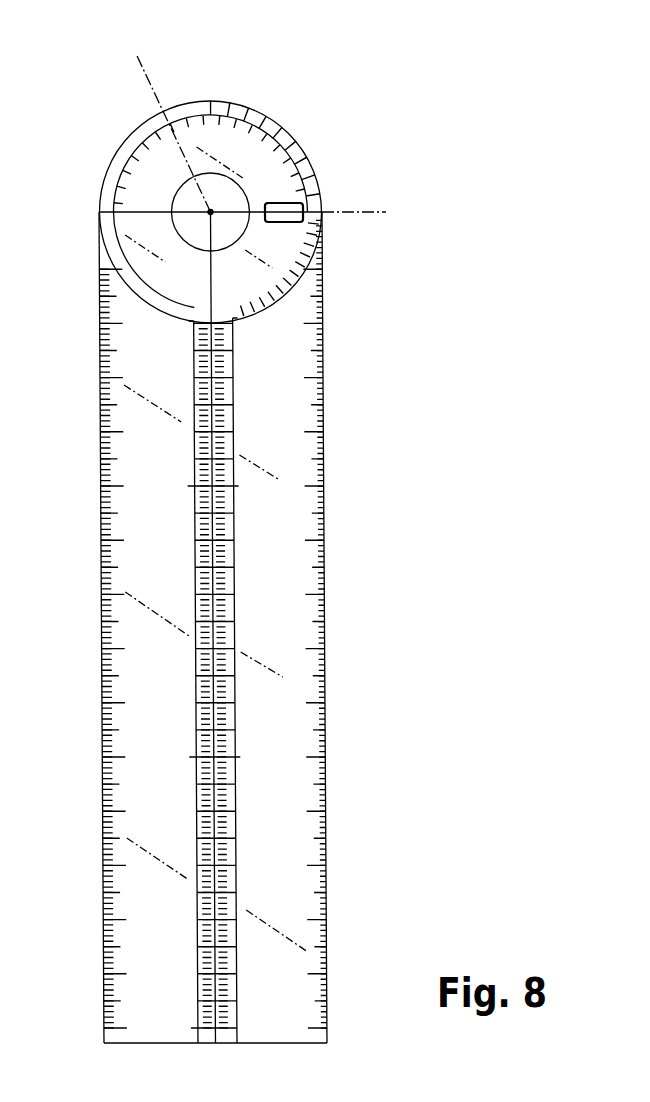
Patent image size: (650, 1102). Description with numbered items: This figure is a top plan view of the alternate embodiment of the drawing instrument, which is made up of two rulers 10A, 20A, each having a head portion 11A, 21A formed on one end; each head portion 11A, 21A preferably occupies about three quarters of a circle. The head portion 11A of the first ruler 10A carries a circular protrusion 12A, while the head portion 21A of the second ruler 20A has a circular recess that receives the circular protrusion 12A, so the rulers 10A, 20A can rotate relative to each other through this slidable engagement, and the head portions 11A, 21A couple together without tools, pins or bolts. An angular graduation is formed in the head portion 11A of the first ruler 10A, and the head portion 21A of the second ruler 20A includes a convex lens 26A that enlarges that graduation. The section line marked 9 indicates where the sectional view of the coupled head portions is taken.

The section line 9- 9 is at (168, 42).
The ruler 10A is at (111, 688).
The ruler 20A is at (313, 604).
The head portion 11A is at (103, 226).
The circular protrusion 12A is at (153, 278).
The head portion 21A is at (298, 140).
The convex lens 26A is at (306, 205).